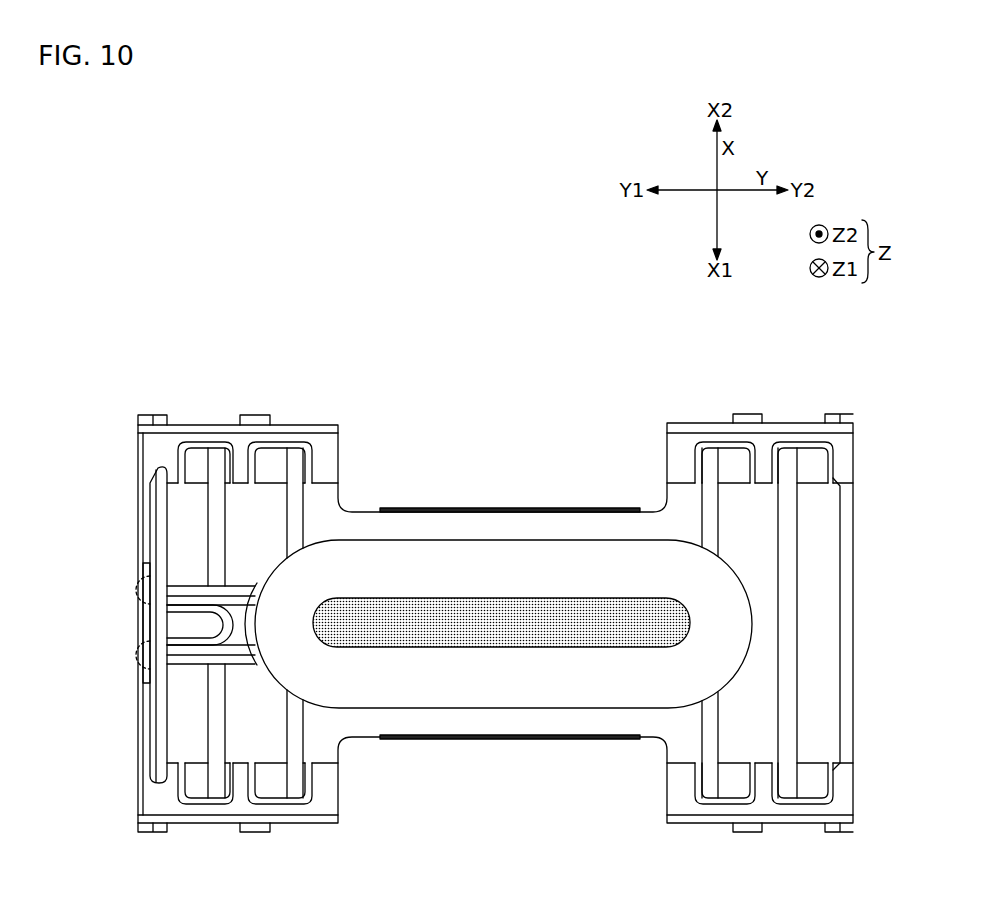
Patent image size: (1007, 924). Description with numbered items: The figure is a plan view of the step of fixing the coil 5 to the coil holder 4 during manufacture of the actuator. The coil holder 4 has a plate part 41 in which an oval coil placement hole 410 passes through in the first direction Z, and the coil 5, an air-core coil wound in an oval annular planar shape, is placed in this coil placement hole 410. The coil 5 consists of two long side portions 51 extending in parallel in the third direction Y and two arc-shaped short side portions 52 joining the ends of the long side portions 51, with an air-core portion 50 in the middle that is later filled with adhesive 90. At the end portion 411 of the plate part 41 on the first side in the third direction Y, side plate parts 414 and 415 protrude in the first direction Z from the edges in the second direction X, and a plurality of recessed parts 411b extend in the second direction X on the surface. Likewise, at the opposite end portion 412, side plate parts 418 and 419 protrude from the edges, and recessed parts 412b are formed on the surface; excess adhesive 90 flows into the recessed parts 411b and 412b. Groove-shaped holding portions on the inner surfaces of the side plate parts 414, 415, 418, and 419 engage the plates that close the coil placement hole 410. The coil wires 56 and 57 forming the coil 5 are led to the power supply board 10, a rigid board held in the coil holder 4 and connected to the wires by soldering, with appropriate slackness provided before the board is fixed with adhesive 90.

The coil holder 4 is at (127, 428).
The coil 5 is at (578, 617).
The power supply board 10 is at (152, 620).
The plate part 41 is at (440, 727).
The air-core portion 50 is at (515, 590).
The long side portions 51 is at (560, 565).
The short side portions 52 is at (725, 628).
The coil wire 56 is at (185, 660).
The coil wire 57 is at (180, 580).
The adhesive 90 is at (485, 612).
The coil placement hole 410 is at (540, 712).
The end portion 411 is at (196, 490).
The recessed parts 411b is at (222, 520).
The end portion 412 is at (810, 590).
The recessed parts 412b is at (707, 525).
The side plate part 414 is at (303, 817).
The side plate part 415 is at (290, 475).
The side plate part 418 is at (782, 820).
The side plate part 419 is at (702, 428).